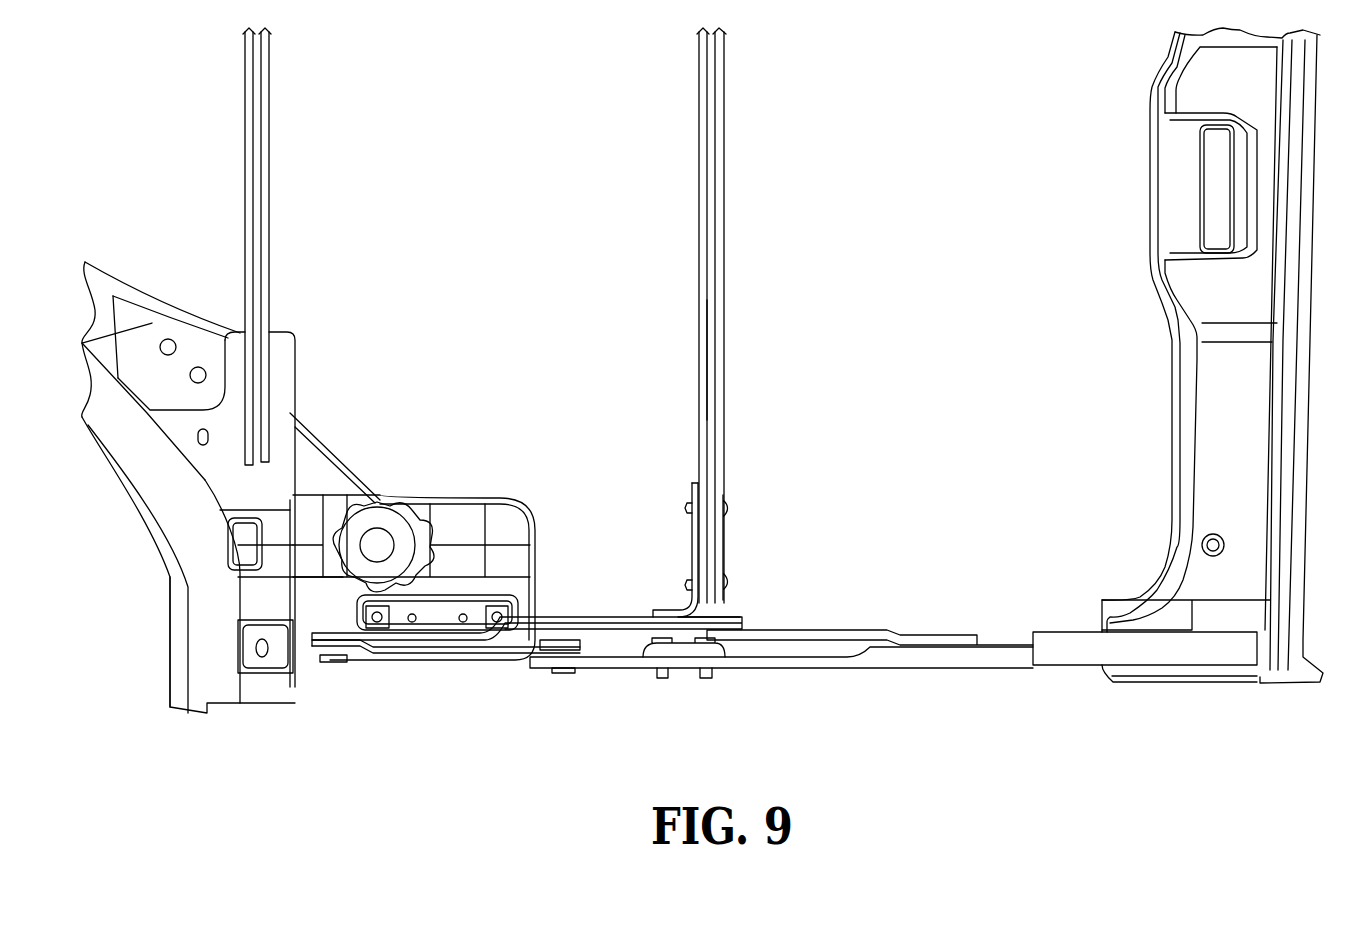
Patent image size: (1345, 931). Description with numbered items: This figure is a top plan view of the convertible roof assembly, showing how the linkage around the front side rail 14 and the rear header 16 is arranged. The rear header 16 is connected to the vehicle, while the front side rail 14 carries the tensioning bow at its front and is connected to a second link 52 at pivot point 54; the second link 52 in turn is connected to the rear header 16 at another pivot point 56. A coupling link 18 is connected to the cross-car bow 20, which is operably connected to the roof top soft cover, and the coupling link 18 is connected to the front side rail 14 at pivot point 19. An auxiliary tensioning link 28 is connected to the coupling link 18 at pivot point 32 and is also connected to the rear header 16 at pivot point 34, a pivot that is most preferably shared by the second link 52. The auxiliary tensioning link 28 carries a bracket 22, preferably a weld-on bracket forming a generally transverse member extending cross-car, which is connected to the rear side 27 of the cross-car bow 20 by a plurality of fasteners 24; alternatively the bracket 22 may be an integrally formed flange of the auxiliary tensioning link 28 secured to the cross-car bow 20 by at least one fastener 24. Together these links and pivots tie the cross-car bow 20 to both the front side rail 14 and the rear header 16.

The front side rail 14 is at (787, 670).
The rear header 16 is at (140, 292).
The coupling link 18 is at (826, 645).
The pivot point 19 is at (958, 633).
The cross-car bow 20 is at (698, 175).
The bracket 22 is at (692, 497).
The fastener 24 is at (730, 508).
The rear side 27 is at (698, 380).
The auxiliary tensioning link 28 is at (543, 643).
The pivot point 32 is at (733, 620).
The pivot point 34 is at (325, 628).
The second link 52 is at (435, 653).
The pivot point 54 is at (562, 673).
The pivot point 56 is at (330, 662).